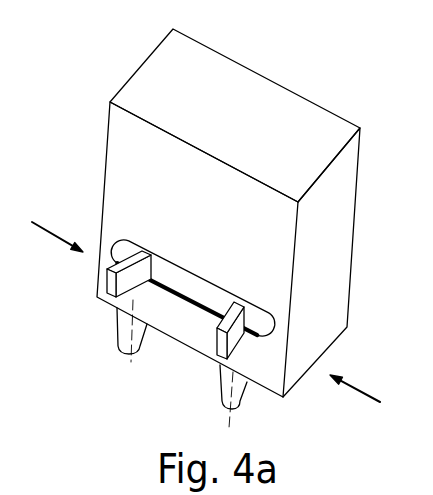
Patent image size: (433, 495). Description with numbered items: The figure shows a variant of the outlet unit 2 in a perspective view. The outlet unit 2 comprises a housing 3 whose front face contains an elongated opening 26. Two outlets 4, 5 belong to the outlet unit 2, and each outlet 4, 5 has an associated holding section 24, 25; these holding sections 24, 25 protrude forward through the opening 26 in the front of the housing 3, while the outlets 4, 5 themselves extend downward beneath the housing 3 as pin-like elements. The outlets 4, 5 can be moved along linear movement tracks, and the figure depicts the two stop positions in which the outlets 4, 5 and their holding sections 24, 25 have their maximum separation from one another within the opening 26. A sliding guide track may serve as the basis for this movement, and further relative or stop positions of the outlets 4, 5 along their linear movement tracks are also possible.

The outlet unit 2 is at (323, 327).
The housing 3 is at (317, 133).
The outlet 4 is at (240, 390).
The outlet 5 is at (142, 345).
The holding section 24 is at (248, 338).
The holding section 25 is at (98, 300).
The opening 26 is at (197, 289).